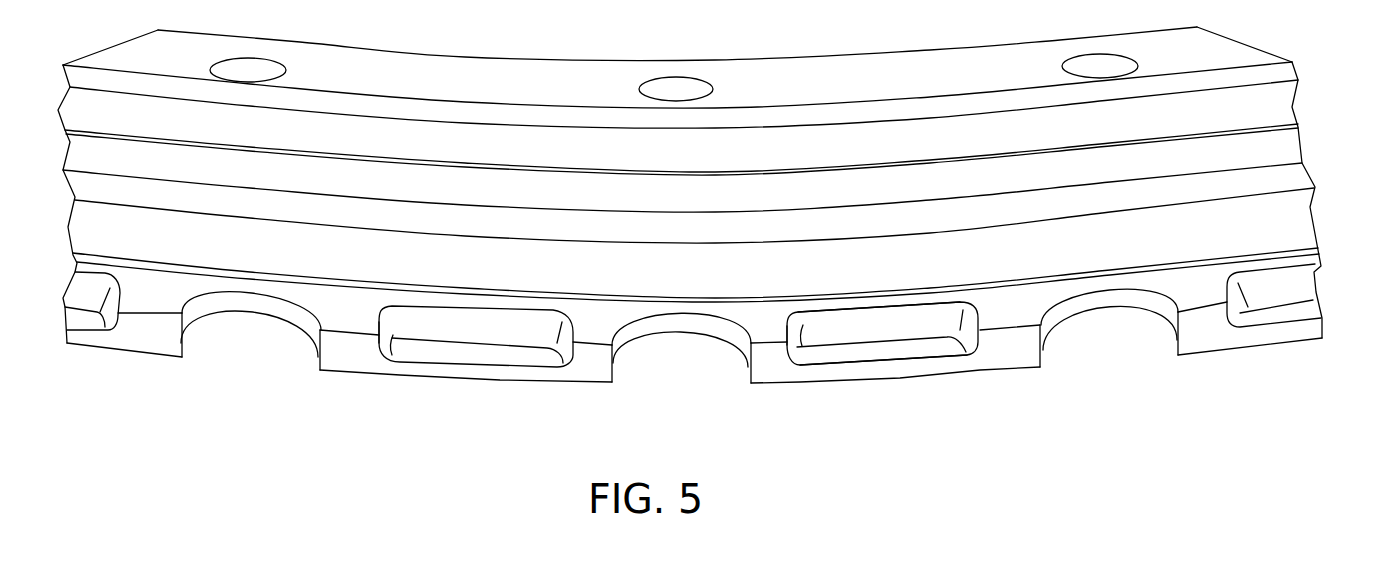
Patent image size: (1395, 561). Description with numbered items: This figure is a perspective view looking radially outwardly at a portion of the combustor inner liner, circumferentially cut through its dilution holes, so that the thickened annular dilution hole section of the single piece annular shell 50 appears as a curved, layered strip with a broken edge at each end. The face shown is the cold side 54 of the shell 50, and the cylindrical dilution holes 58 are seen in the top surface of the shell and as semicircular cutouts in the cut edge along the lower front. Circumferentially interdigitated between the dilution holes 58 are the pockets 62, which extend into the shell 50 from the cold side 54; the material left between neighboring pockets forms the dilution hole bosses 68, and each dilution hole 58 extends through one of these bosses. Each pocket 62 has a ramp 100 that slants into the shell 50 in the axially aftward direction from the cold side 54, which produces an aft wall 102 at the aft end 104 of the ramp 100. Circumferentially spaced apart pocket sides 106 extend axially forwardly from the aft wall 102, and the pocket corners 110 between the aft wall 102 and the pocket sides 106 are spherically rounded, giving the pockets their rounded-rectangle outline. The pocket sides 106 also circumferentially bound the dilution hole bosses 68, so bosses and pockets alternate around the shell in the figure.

The annular shell 50 is at (1317, 235).
The cold side 54 is at (250, 250).
The dilution holes 58 is at (235, 352).
The pockets 62 is at (901, 352).
The dilution hole bosses 68 is at (358, 297).
The ramp 100 is at (933, 347).
The aft wall 102 is at (904, 321).
The aft end 104 is at (859, 333).
The pocket sides 106 is at (393, 337).
The pocket corners 110 is at (393, 336).